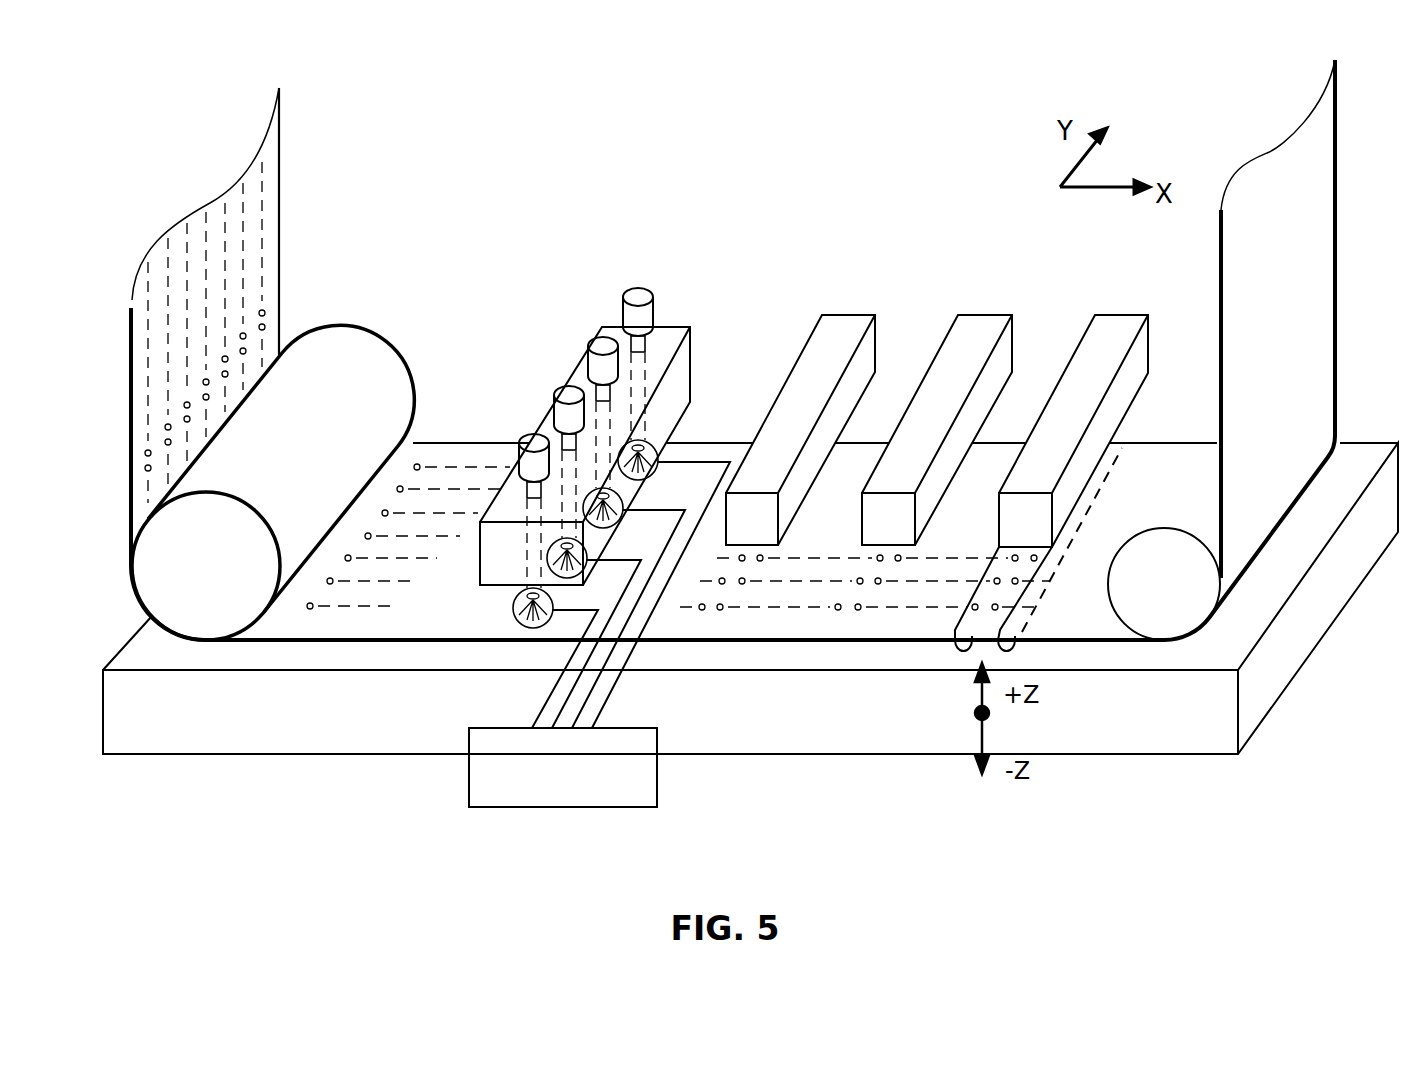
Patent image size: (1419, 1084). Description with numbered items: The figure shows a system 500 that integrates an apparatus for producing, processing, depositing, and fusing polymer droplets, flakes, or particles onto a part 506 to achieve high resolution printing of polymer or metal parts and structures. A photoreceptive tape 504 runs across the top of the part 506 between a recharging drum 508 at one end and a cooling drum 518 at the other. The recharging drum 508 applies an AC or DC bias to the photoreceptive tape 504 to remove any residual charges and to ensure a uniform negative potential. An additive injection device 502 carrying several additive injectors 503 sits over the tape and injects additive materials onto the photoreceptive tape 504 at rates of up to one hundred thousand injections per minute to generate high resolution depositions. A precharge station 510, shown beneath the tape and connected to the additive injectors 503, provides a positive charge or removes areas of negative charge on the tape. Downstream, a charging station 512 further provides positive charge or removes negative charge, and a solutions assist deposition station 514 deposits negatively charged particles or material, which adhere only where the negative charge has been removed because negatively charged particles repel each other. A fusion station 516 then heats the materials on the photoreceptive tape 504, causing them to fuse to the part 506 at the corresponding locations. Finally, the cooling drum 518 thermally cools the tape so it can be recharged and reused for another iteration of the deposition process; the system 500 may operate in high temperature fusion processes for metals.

The system 500 is at (789, 800).
The additive injection device 502 is at (680, 327).
The additive injectors 503 is at (638, 285).
The photoreceptive tape 504 is at (280, 246).
The part 506 is at (365, 708).
The recharging drum 508 is at (392, 343).
The precharge station 510 is at (612, 808).
The charging station 512 is at (845, 315).
The solutions assist deposition station 514 is at (980, 315).
The fusion station 516 is at (1122, 315).
The cooling drum 518 is at (1213, 460).